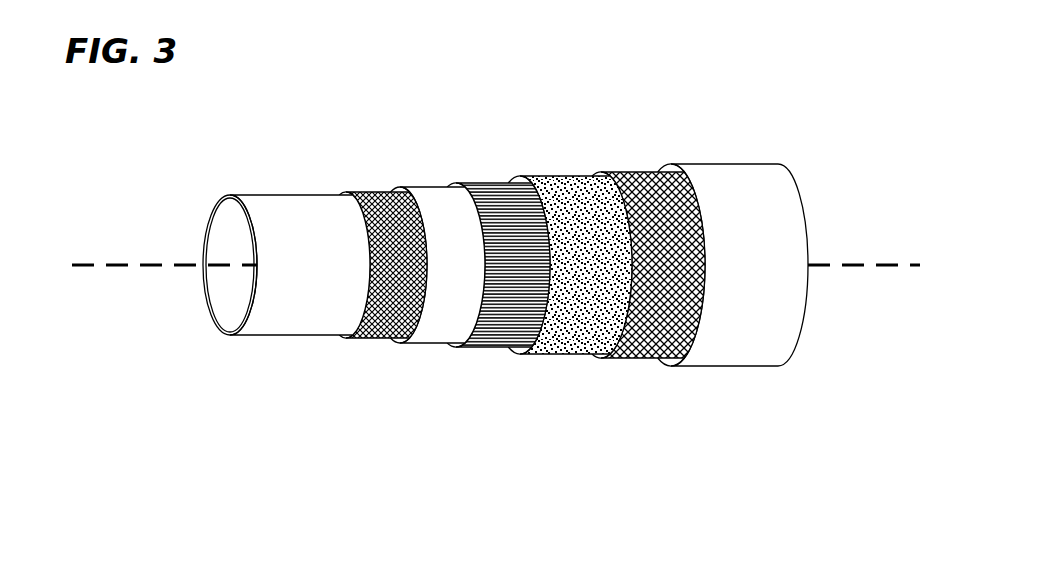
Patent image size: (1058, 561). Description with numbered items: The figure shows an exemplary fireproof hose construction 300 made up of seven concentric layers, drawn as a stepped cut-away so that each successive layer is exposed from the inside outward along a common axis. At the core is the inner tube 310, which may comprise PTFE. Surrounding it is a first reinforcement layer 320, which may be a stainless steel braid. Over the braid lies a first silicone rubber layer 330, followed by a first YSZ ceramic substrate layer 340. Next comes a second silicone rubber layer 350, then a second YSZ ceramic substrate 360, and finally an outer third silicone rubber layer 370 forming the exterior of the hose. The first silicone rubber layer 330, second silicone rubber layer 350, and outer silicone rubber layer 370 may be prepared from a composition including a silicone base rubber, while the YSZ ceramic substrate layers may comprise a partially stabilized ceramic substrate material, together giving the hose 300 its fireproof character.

The fireproof hose construction 300 is at (529, 270).
The inner tube 310 is at (275, 358).
The first reinforcement layer 320 is at (378, 360).
The first silicone rubber layer 330 is at (432, 363).
The first YSZ ceramic substrate layer 340 is at (497, 365).
The second silicone rubber layer 350 is at (576, 373).
The second YSZ ceramic substrate 360 is at (651, 378).
The outer third silicone rubber layer 370 is at (788, 382).